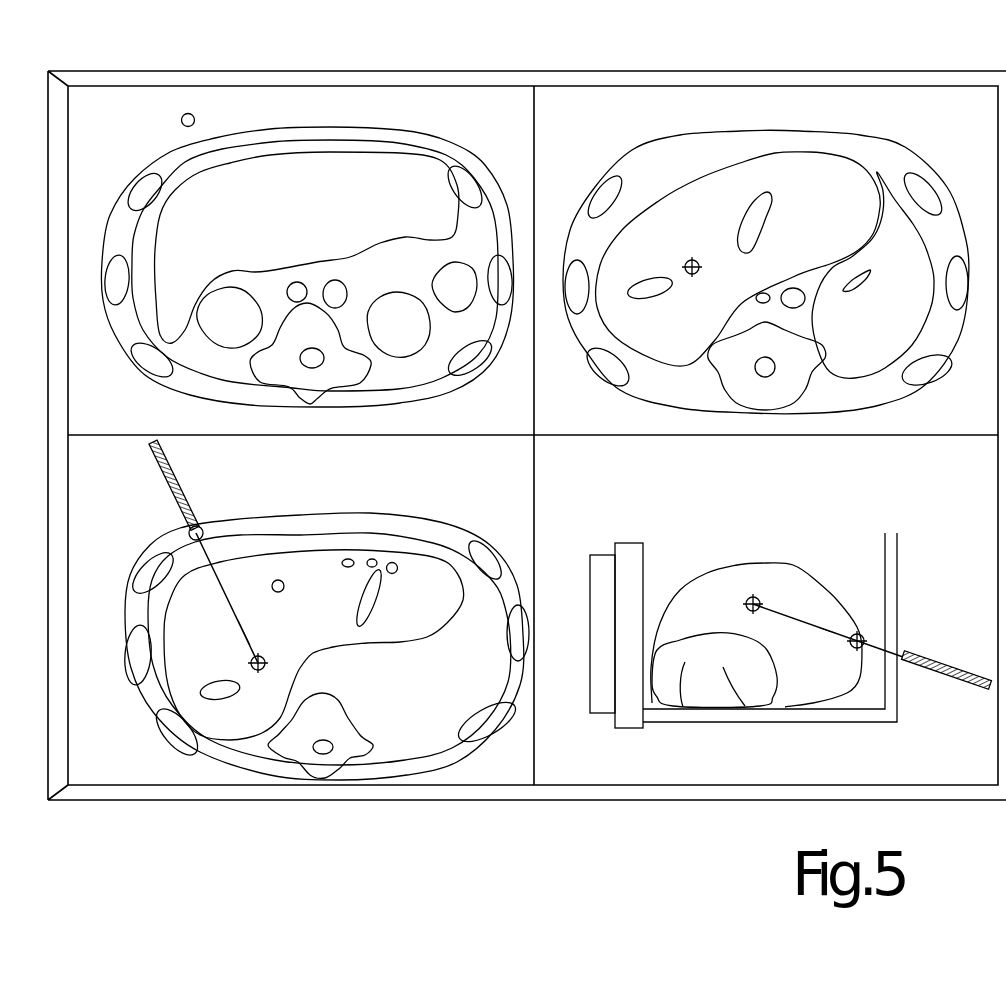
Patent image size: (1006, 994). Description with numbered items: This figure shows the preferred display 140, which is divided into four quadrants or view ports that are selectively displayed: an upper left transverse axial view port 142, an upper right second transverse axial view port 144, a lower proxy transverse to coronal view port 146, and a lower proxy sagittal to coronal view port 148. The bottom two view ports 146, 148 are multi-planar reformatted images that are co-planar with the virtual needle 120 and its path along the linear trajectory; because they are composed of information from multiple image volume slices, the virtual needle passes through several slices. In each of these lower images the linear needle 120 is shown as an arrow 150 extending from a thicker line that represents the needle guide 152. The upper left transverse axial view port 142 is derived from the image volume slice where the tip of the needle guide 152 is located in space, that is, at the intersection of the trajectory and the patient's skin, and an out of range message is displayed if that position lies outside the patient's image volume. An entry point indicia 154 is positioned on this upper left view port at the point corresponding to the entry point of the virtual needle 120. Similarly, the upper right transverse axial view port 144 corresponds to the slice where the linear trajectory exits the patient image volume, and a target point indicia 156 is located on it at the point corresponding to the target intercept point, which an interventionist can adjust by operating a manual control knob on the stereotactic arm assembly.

The virtual needle 120 is at (223, 588).
The display 140 is at (214, 826).
The upper left transverse axial view port 142 is at (497, 122).
The upper right second transverse axial view port 144 is at (632, 130).
The lower proxy transverse to coronal view port 146 is at (491, 765).
The lower proxy sagittal to coronal view port 148 is at (683, 765).
The arrow 150 is at (246, 624).
The needle guide 152 is at (173, 488).
The entry point indicia 154 is at (192, 114).
The target point indicia 156 is at (693, 259).